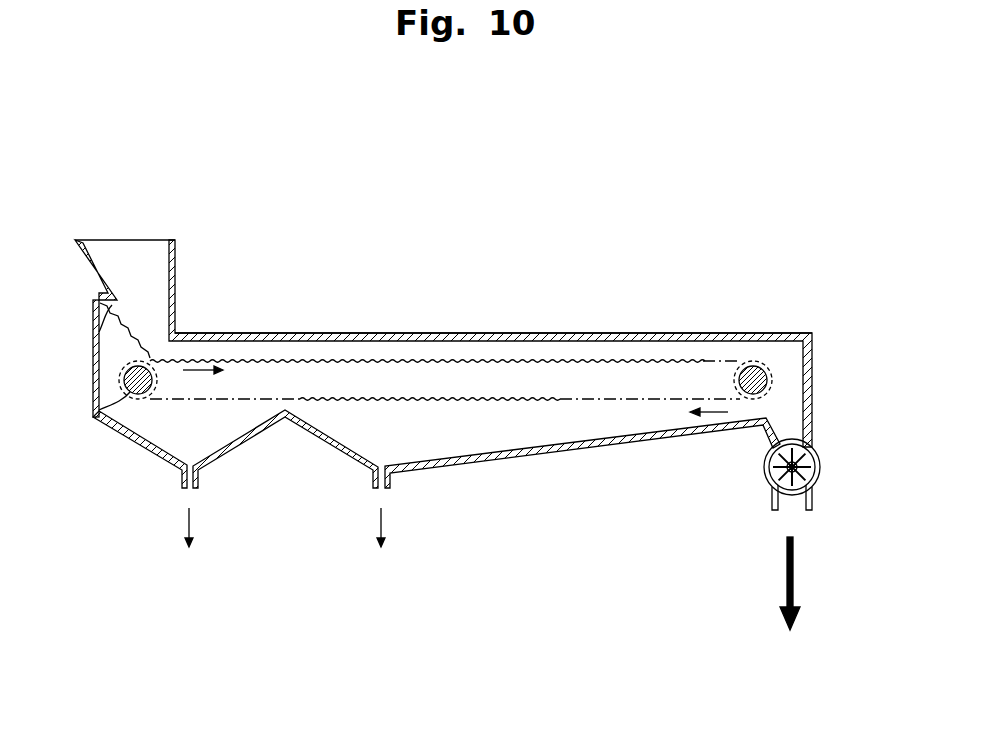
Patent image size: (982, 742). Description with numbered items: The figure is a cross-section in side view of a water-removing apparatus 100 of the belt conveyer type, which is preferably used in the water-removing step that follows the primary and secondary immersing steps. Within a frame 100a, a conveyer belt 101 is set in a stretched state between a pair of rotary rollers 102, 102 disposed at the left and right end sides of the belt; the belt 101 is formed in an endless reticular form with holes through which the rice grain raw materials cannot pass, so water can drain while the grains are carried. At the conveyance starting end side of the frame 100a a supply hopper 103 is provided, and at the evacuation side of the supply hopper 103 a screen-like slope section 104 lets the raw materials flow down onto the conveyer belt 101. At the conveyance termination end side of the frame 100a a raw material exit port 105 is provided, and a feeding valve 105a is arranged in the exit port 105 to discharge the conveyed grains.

The water-removing apparatus 100 is at (663, 220).
The frame 100a is at (323, 333).
The conveyer belt 101 is at (545, 362).
The rotary rollers 102 is at (750, 366).
The supply hopper 103 is at (176, 244).
The screen-like slope section 104 is at (93, 315).
The raw material exit port 105 is at (830, 445).
The feeding valve 105a is at (767, 474).